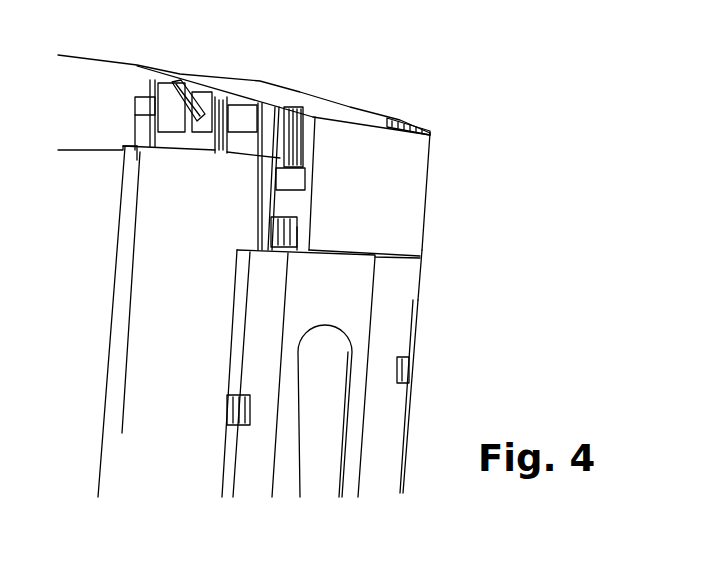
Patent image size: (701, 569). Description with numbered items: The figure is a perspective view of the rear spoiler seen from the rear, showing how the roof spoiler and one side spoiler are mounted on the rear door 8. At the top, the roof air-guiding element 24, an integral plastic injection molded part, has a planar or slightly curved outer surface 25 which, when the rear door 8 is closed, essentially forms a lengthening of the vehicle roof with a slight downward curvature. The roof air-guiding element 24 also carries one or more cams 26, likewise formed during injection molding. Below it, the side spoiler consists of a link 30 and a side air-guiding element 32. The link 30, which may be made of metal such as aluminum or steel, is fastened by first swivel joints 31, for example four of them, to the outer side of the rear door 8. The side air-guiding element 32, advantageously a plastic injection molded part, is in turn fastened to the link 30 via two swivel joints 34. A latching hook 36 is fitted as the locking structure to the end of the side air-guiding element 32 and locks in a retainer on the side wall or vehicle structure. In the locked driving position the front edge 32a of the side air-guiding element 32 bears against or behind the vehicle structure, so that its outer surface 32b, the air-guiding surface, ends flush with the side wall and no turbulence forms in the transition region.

The rear door 8 is at (157, 283).
The roof air-guiding element 24 is at (390, 123).
The outer surface 25 is at (313, 100).
The cam 26 is at (197, 96).
The link 30 is at (405, 300).
The first swivel joint 31 is at (228, 412).
The side air-guiding element 32 is at (435, 152).
The front edge 32a is at (300, 227).
The outer surface 32b is at (420, 187).
The swivel joint 34 is at (408, 372).
The latching hook 36 is at (305, 187).